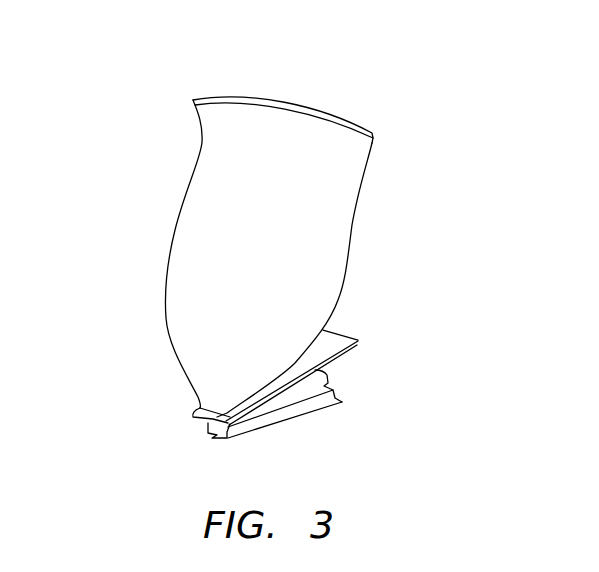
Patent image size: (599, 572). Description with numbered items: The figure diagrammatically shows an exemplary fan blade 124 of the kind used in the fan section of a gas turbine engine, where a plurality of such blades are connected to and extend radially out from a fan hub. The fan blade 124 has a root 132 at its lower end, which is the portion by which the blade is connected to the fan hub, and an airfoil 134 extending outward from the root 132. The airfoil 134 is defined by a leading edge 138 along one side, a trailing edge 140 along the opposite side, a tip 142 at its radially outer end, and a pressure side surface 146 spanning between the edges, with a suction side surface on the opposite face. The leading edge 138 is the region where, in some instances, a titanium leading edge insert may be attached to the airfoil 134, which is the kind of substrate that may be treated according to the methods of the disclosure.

The fan blade 124 is at (136, 234).
The root 132 is at (208, 428).
The airfoil 134 is at (188, 306).
The leading edge 138 is at (190, 378).
The trailing edge 140 is at (350, 267).
The tip 142 is at (322, 112).
The pressure side surface 146 is at (342, 203).